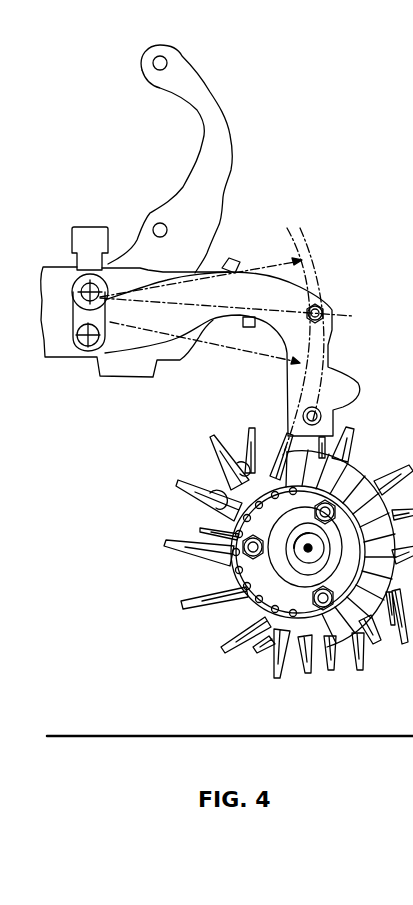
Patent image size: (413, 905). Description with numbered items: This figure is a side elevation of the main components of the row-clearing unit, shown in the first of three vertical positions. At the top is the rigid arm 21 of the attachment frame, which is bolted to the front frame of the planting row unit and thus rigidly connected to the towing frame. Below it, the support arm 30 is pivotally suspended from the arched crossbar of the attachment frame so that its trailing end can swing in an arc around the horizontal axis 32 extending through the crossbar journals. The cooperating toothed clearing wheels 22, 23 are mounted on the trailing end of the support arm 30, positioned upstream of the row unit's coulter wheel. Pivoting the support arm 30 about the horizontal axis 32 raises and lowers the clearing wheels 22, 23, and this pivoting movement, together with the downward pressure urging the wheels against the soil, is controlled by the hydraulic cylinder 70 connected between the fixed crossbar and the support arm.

The rigid arm 21 is at (229, 132).
The support arm 30 is at (330, 343).
The horizontal axis 32 is at (82, 345).
The hydraulic cylinder 70 is at (122, 375).
The toothed clearing wheel 22 is at (233, 640).
The toothed clearing wheel 23 is at (258, 648).